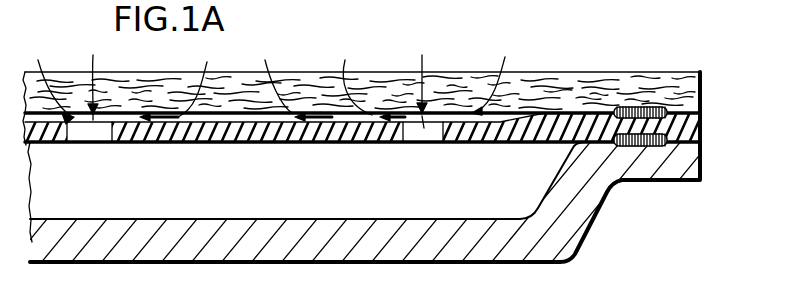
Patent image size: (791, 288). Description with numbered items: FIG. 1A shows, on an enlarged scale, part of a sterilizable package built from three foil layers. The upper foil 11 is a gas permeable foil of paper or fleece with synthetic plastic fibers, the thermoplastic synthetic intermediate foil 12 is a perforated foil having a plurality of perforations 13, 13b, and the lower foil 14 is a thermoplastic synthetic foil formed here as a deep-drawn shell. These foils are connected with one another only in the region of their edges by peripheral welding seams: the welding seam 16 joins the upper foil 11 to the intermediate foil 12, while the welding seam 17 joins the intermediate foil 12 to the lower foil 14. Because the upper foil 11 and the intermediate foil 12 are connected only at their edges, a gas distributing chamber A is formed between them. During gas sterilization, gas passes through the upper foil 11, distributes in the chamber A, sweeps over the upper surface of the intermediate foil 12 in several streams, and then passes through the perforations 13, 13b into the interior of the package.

The upper foil 11 is at (525, 92).
The thermoplastic synthetic intermediate foil 12 is at (298, 143).
The perforation 13 is at (95, 142).
The second opening 13b is at (430, 143).
The lower foil 14 is at (575, 222).
The welding seam 16 is at (636, 107).
The welding seam 17 is at (655, 146).
The gas distributing chamber A is at (340, 113).